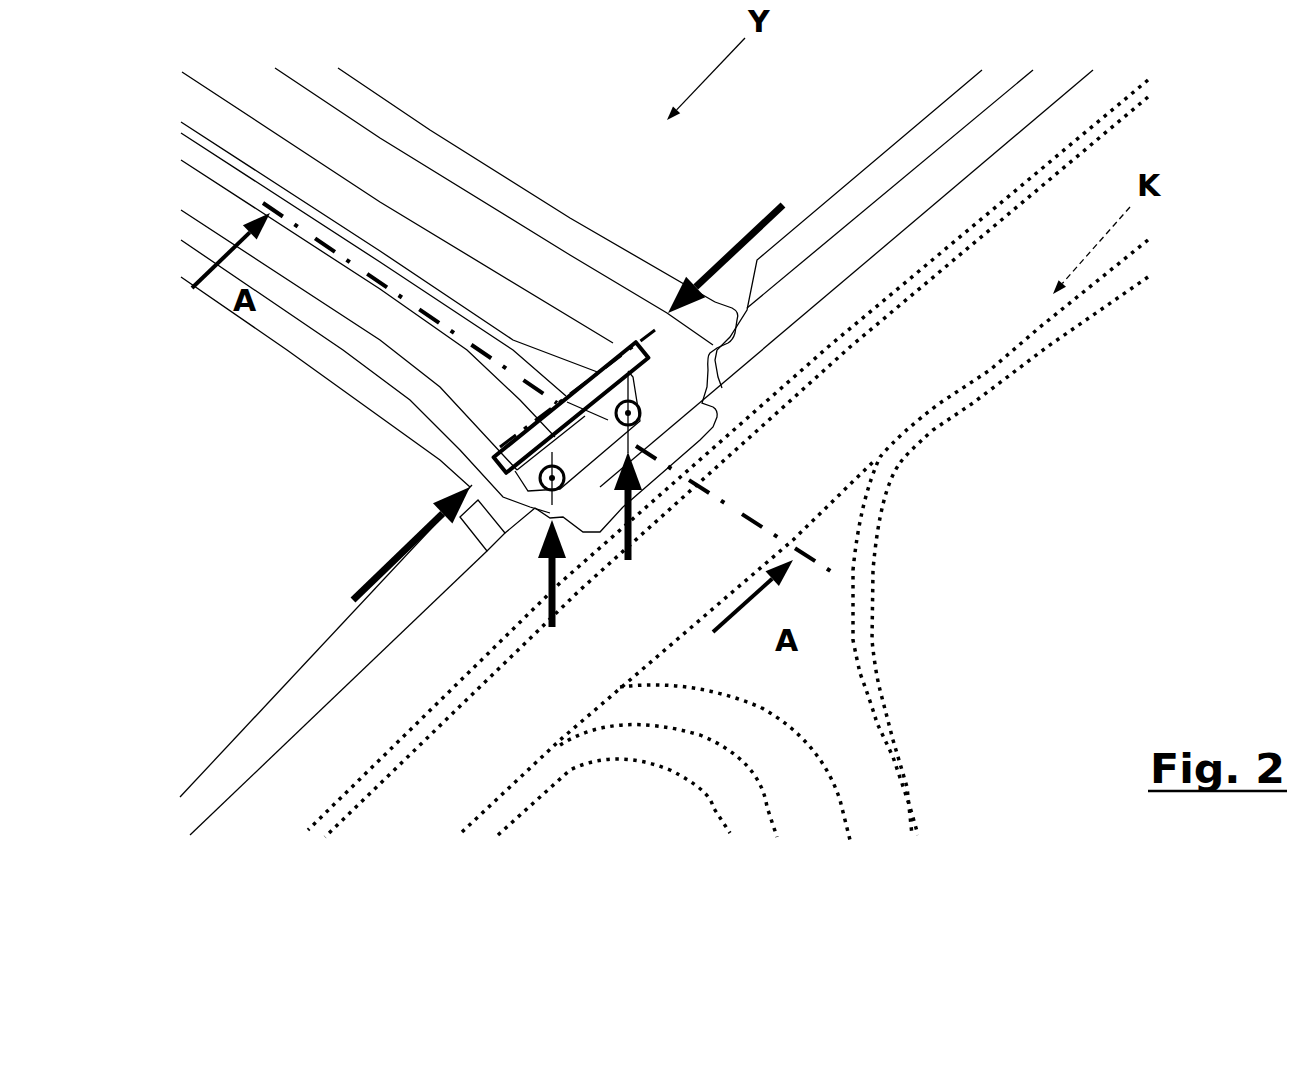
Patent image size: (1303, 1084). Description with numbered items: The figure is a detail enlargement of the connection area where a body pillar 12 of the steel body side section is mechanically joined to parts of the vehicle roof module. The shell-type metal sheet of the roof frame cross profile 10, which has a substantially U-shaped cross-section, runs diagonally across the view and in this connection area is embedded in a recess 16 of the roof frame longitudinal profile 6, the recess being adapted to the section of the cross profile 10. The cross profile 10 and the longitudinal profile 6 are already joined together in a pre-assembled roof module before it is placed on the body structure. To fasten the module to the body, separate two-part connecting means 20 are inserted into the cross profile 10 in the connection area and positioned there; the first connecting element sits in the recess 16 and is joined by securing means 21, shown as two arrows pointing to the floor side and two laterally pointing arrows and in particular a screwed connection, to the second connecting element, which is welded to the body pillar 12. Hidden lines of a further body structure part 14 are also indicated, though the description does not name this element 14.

The roof frame longitudinal profile 6 is at (873, 178).
The roof frame cross profile 10 is at (450, 207).
The body pillar 12 is at (875, 808).
The hidden rail portion 14 is at (955, 365).
The recess 16 is at (722, 388).
The connecting means 20 is at (602, 360).
The securing means 21 is at (568, 410).